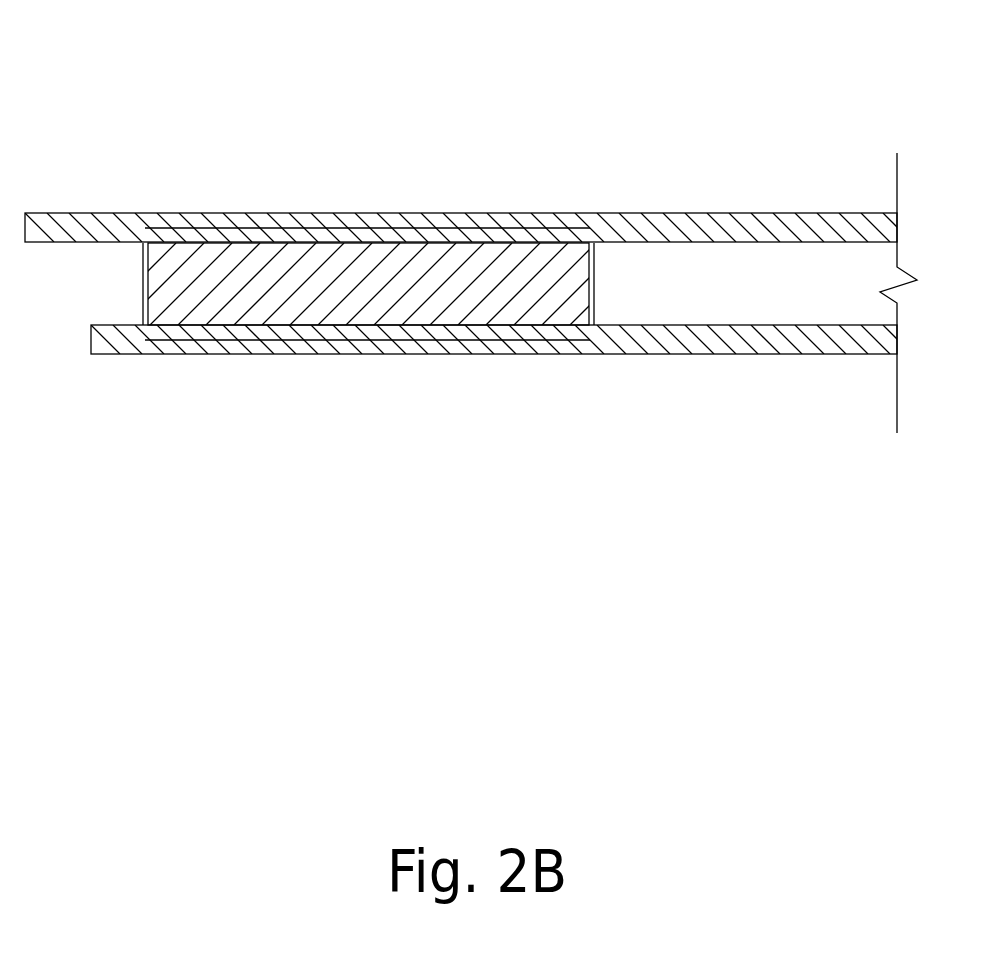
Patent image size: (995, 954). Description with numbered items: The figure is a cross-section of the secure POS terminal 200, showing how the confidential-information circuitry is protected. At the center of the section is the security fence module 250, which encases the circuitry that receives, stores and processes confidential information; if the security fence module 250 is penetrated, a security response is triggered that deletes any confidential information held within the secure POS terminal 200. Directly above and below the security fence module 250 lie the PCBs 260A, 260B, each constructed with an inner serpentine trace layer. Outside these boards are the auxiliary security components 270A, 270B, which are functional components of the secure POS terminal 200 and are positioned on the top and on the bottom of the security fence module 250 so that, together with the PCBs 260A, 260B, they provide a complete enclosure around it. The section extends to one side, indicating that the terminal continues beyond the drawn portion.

The secure POS terminal 200 is at (751, 117).
The security fence module 250 is at (425, 284).
The PCB 260A is at (318, 225).
The PCB 260B is at (322, 345).
The auxiliary security component 270A is at (127, 210).
The auxiliary security component 270B is at (161, 359).